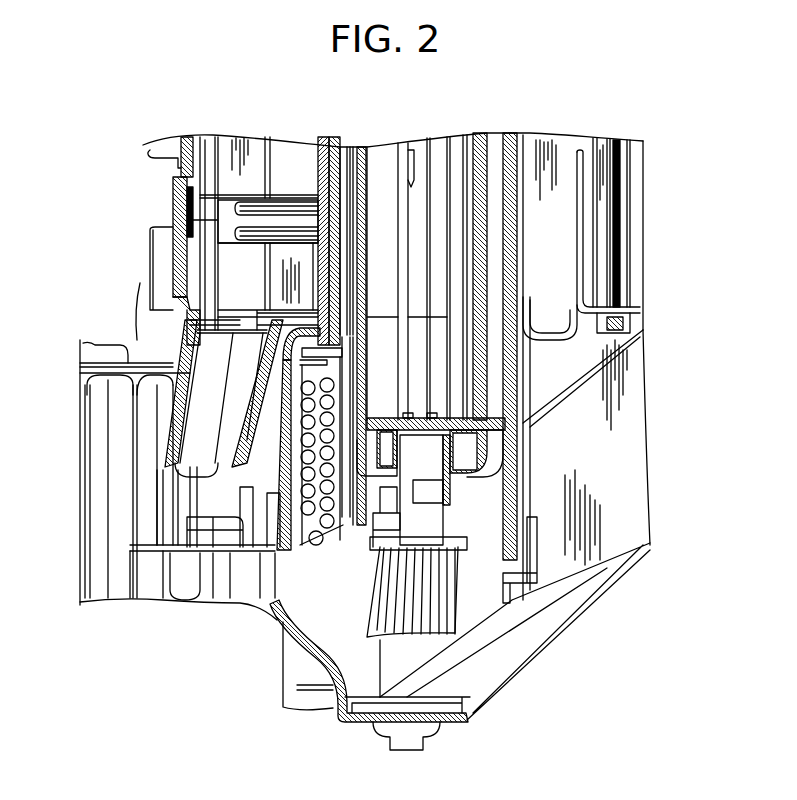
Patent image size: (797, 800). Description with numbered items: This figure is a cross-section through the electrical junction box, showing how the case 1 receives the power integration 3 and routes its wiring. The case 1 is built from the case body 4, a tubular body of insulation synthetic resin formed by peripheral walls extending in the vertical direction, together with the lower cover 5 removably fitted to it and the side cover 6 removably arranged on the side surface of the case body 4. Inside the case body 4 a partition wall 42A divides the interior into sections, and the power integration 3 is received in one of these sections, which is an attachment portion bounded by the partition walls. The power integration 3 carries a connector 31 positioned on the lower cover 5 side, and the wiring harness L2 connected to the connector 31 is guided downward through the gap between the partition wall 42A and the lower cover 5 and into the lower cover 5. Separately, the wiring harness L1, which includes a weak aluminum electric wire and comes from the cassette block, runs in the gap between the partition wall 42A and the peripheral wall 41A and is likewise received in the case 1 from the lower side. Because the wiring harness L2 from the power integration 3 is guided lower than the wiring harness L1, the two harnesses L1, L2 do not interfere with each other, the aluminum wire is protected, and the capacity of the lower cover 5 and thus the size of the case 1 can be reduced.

The case 1 is at (512, 444).
The power integration 3 is at (438, 135).
The case body 4 is at (647, 230).
The lower cover 5 is at (648, 362).
The side cover 6 is at (170, 200).
The connector 31 is at (420, 527).
The peripheral wall 41A is at (293, 463).
The partition wall 42A is at (352, 448).
The wiring harness L1 is at (300, 527).
The wiring harness L2 is at (462, 598).